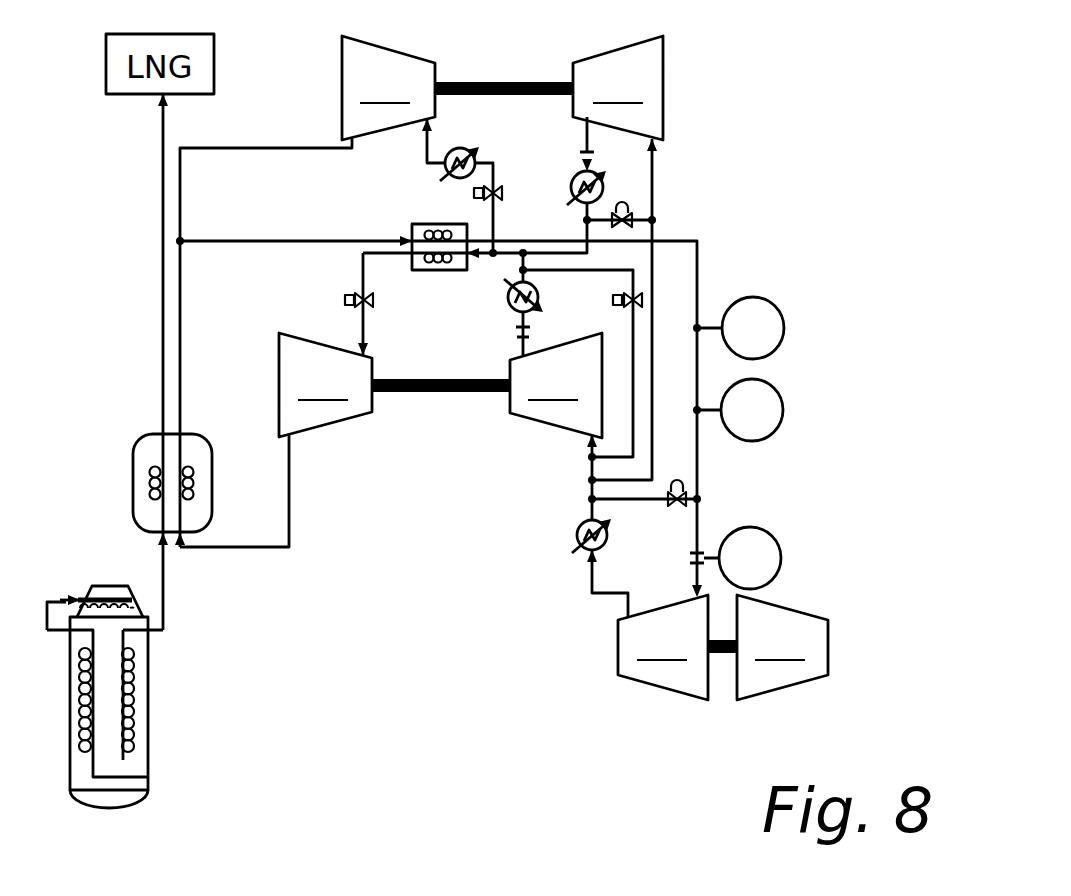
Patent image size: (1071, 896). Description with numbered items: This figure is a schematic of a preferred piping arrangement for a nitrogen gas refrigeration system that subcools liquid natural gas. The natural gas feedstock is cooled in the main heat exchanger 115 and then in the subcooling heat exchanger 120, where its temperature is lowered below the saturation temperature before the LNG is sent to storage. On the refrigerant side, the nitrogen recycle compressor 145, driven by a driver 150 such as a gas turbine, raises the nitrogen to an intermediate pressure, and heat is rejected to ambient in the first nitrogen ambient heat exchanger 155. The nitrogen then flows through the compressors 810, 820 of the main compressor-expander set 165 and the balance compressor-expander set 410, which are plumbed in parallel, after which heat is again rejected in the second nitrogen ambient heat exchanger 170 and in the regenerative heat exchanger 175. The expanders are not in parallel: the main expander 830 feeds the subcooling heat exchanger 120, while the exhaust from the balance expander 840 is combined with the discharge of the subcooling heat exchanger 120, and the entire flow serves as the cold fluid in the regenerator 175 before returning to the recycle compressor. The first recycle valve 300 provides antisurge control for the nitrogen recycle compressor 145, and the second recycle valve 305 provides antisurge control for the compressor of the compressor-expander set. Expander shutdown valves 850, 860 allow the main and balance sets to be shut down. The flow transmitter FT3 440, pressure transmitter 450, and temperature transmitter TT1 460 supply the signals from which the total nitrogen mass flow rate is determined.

The main heat exchanger 115 is at (142, 700).
The subcooling heat exchanger 120 is at (143, 453).
The nitrogen recycle compressor 145 is at (663, 647).
The driver 150 is at (782, 647).
The first nitrogen ambient heat exchanger 155 is at (585, 543).
The compressor-expander set 165 is at (440, 422).
The second nitrogen ambient heat exchanger 170 is at (577, 177).
The regenerative heat exchanger 175 is at (458, 266).
The first recycle valve 300 is at (677, 507).
The second recycle valve 305 is at (630, 210).
The compressor-expander set 410 is at (554, 74).
The flow transmitter FT3 440 is at (757, 536).
The pressure transmitter 450 is at (744, 304).
The temperature transmitter TT1 460 is at (762, 430).
The compressor 810 is at (556, 385).
The compressor 820 is at (618, 88).
The main expander 830 is at (325, 385).
The balance expander 840 is at (388, 88).
The expander shutdown valve 850 is at (358, 292).
The expander shutdown valve 860 is at (487, 204).